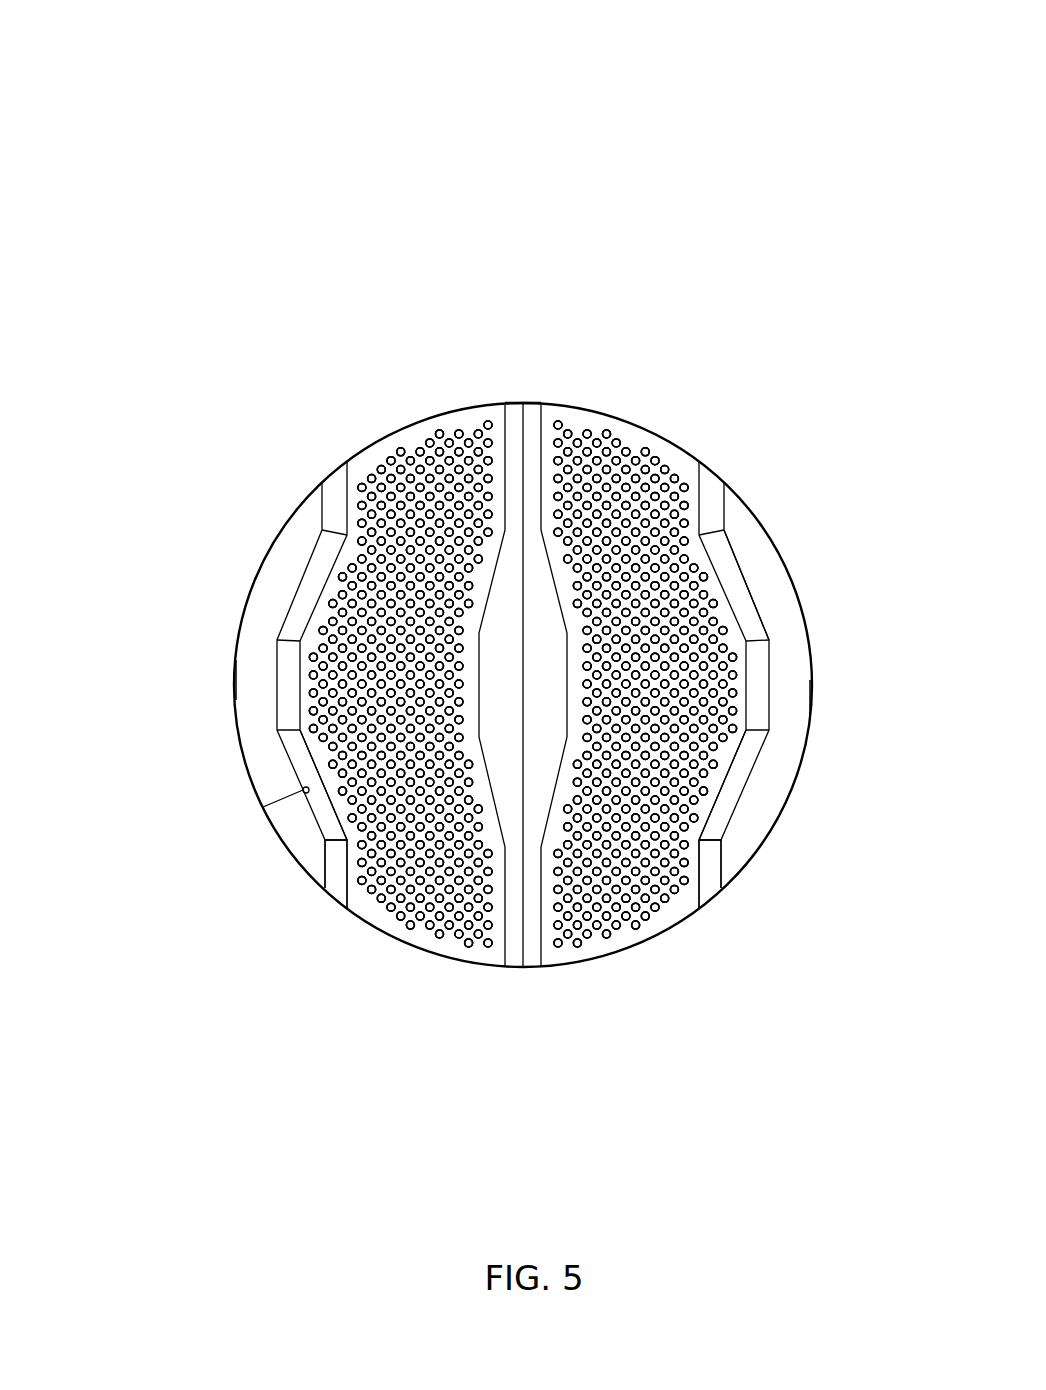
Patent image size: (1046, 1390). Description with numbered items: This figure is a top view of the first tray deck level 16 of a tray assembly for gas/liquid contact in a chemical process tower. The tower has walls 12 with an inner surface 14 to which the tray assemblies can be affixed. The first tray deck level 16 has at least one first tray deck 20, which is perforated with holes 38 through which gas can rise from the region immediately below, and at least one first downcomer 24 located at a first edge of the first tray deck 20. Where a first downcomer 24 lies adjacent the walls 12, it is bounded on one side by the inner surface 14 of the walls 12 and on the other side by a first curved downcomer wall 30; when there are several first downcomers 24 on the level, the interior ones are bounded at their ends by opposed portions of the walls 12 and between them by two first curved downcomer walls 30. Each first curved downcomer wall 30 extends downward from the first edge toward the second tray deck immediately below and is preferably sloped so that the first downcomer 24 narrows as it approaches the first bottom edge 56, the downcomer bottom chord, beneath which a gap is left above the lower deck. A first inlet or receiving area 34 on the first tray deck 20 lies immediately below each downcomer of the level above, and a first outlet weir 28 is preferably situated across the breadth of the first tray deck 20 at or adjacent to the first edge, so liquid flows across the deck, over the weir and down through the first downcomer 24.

The walls 12 is at (255, 750).
The inner surface 14 is at (304, 792).
The first tray deck level 16 is at (432, 188).
The first tray deck 20 is at (413, 490).
The first downcomer 24 is at (272, 587).
The first outlet weir 28 is at (347, 840).
The first curved downcomer wall 30 is at (322, 880).
The first inlet area 34 is at (502, 683).
The holes 38 is at (608, 445).
The first bottom edge 56 is at (750, 577).